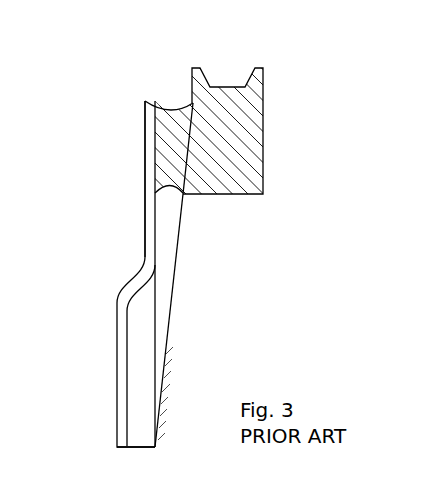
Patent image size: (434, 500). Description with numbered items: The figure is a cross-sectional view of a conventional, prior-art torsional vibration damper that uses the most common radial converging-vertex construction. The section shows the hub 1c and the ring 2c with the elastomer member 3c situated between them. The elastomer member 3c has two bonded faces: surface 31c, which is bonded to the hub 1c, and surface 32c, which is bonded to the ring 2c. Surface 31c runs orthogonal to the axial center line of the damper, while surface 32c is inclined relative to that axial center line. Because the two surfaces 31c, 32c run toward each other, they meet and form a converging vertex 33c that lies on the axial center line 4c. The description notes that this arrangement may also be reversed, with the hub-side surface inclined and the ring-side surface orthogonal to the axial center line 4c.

The hub 1c is at (120, 327).
The ring 2c is at (250, 93).
The elastomer member 3c is at (172, 118).
The axial center line 4c is at (133, 445).
The surface 31c is at (155, 147).
The surface 32c is at (188, 152).
The converging vertex 33c is at (156, 446).